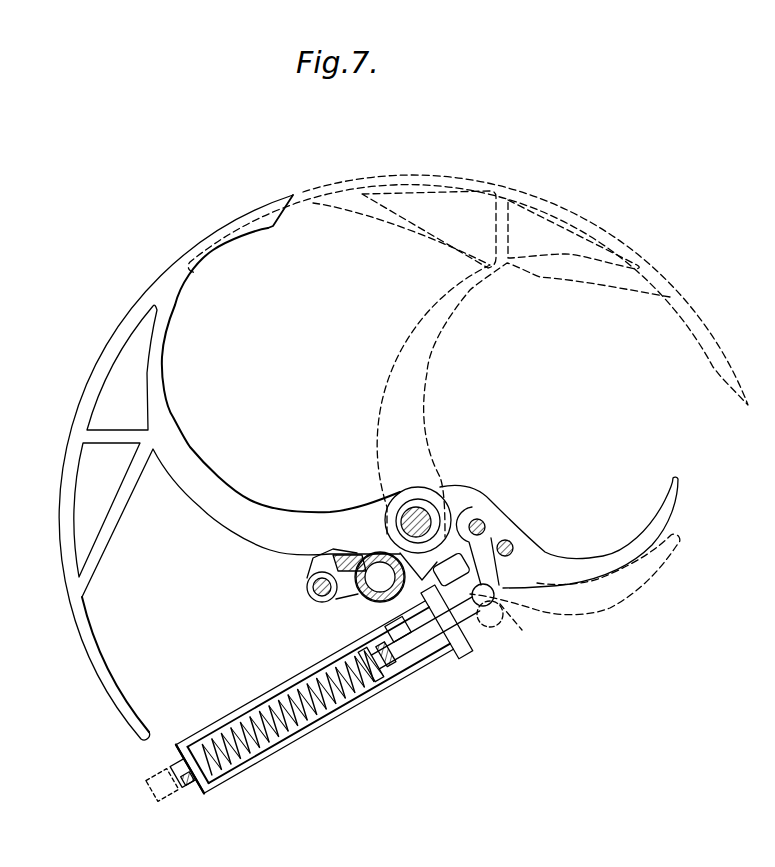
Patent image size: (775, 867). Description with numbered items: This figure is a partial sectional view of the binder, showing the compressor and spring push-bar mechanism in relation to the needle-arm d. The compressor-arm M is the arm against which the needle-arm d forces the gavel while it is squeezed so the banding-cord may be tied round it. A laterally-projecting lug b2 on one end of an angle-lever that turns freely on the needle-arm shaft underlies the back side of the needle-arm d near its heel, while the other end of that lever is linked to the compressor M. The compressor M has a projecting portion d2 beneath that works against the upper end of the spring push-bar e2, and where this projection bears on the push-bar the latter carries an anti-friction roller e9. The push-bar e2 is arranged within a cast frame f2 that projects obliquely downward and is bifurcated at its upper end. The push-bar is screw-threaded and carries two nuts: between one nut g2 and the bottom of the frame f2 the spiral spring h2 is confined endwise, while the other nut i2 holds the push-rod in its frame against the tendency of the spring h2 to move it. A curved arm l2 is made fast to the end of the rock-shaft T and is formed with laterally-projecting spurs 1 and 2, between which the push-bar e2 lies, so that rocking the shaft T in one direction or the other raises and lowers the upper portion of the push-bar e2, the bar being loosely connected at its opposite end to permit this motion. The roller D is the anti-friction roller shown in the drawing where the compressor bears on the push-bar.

The needle-arm d is at (248, 208).
The laterally-projecting lug b2 is at (350, 555).
The roller D is at (356, 575).
The laterally-projecting spur 1 is at (385, 628).
The cast frame f2 is at (309, 701).
The spring push-bar e2 is at (425, 633).
The nut g2 is at (379, 661).
The laterally-projecting spur 2 is at (428, 668).
The curved arm l2 is at (472, 636).
The spiral spring h2 is at (220, 718).
The nut i2 is at (158, 784).
The rock-shaft T is at (451, 569).
The anti-friction roller e9 is at (487, 605).
The compressor-arm M is at (539, 532).
The projecting portion d2 is at (512, 613).